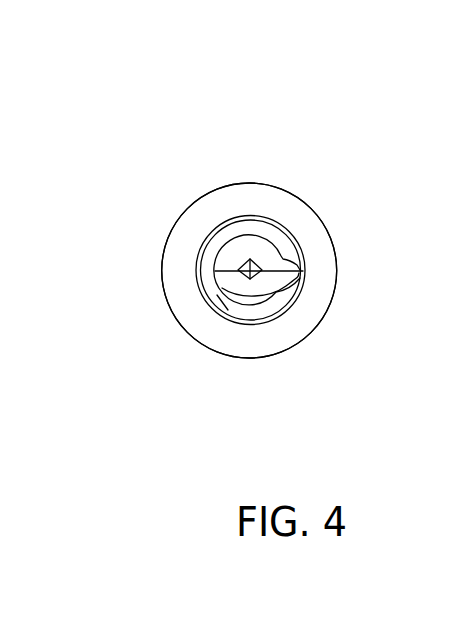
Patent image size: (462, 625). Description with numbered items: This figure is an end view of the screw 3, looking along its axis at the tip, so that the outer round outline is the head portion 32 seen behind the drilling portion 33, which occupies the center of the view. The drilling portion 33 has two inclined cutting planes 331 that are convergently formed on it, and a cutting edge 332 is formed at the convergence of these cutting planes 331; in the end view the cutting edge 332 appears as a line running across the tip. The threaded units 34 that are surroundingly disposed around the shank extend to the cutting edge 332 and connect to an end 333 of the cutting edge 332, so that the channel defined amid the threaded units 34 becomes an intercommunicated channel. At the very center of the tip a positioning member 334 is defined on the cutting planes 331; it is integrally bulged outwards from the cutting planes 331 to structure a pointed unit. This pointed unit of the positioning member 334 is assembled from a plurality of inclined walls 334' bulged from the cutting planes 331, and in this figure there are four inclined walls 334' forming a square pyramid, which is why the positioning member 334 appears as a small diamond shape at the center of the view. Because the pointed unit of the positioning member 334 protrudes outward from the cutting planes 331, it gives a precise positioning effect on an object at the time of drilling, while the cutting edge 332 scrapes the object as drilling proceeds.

The screw 3 is at (141, 149).
The head portion 32 is at (249, 183).
The drilling portion 33 is at (288, 250).
The cutting planes 331 is at (240, 282).
The cutting edge 332 is at (283, 277).
The end of the cutting edge 333 is at (303, 270).
The threaded units 34 is at (217, 297).
The positioning member 334 is at (288, 340).
The inclined walls 334' is at (230, 337).